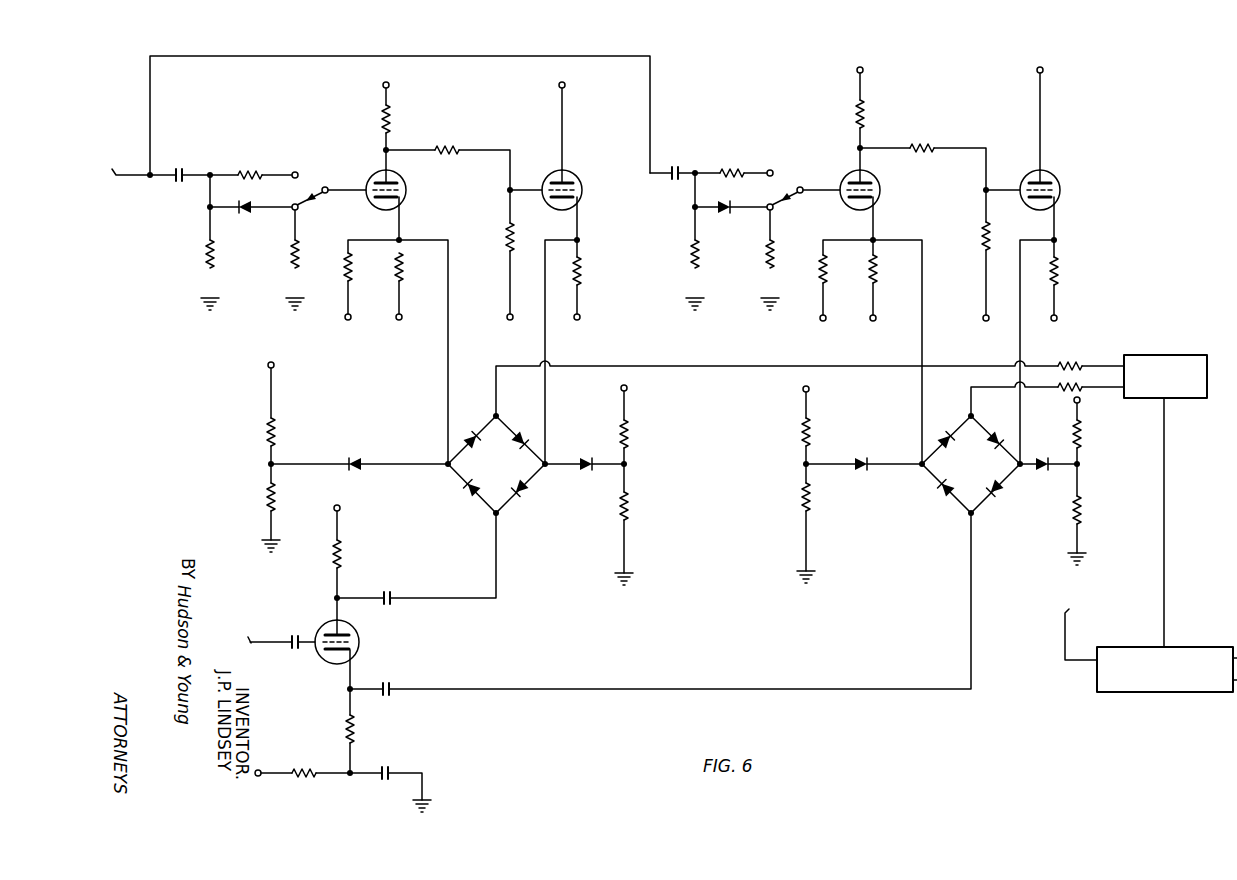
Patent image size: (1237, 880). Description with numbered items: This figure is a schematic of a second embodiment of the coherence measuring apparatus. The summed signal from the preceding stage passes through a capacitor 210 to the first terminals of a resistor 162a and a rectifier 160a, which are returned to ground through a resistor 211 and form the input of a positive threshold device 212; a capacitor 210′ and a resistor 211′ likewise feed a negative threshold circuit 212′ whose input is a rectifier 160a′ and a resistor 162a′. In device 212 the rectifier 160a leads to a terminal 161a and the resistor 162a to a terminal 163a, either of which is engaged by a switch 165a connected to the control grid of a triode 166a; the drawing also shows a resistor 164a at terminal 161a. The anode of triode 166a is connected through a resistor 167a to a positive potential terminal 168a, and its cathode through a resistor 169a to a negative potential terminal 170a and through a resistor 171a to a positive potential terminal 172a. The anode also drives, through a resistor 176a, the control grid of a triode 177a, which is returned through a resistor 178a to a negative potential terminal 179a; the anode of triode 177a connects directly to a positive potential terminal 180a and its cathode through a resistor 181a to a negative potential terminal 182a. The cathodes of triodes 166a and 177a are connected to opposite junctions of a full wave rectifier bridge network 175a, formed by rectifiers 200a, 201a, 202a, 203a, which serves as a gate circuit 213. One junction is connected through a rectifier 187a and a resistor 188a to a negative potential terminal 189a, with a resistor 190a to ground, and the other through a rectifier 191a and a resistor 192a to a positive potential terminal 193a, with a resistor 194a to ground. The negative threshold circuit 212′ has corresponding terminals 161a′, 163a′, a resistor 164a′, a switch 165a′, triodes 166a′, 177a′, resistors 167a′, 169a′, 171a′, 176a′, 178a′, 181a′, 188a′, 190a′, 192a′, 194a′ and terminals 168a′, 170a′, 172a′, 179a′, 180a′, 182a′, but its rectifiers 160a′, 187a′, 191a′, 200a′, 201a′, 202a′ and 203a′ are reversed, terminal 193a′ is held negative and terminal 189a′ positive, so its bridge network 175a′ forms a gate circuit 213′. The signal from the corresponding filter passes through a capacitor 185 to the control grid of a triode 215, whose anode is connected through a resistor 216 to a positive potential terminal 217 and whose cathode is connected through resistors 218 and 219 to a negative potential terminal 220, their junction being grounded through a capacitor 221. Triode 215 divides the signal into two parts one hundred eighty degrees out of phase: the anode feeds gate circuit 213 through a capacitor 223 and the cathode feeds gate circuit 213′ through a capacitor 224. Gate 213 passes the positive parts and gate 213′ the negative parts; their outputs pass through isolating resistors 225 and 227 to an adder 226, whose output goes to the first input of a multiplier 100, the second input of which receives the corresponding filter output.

The multiplier 100 is at (1188, 647).
The rectifier 160a is at (245, 215).
The rectifier 160a′ is at (710, 215).
The terminal 161a is at (298, 210).
The terminal 161a′ is at (773, 210).
The resistor 162a is at (254, 166).
The resistor 162a′ is at (732, 165).
The terminal 163a is at (297, 171).
The terminal 163a′ is at (773, 170).
The resistor 164a is at (292, 256).
The resistor 164a′ is at (767, 256).
The switch 165a is at (320, 195).
The switch 165a′ is at (798, 188).
The triode 166a is at (404, 187).
The triode 166a′ is at (880, 188).
The resistor 167a is at (390, 111).
The resistor 167a′ is at (866, 113).
The positive potential terminal 168a is at (383, 87).
The potential terminal 168a′ is at (864, 73).
The resistor 169a is at (400, 255).
The resistor 169a′ is at (876, 261).
The negative potential terminal 170a is at (399, 320).
The potential terminal 170a′ is at (873, 322).
The resistor 171a is at (346, 270).
The resistor 171a′ is at (818, 263).
The positive potential terminal 172a is at (346, 319).
The potential terminal 172a′ is at (821, 322).
The full wave rectifier bridge network 175a is at (508, 475).
The full wave rectifier bridge network 175a′ is at (986, 475).
The resistor 176a is at (448, 145).
The resistor 176a′ is at (916, 143).
The triode 177a is at (578, 172).
The triode 177a′ is at (1062, 181).
The resistor 178a is at (508, 226).
The resistor 178a′ is at (982, 227).
The negative potential terminal 179a is at (509, 320).
The potential terminal 179a′ is at (984, 322).
The positive potential terminal 180a is at (565, 87).
The potential terminal 180a′ is at (1045, 71).
The resistor 181a is at (585, 269).
The resistor 181a′ is at (1060, 266).
The negative potential terminal 182a is at (580, 316).
The potential terminal 182a′ is at (1058, 317).
The capacitor 185 is at (296, 636).
The rectifier 187a is at (355, 458).
The rectifier 187a′ is at (862, 459).
The resistor 188a is at (265, 429).
The resistor 188a′ is at (800, 433).
The negative potential terminal 189a is at (268, 368).
The positive potential terminal 189a′ is at (803, 391).
The resistor 190a is at (265, 491).
The resistor 190a′ is at (800, 511).
The rectifier 191a is at (586, 471).
The rectifier 191a′ is at (1040, 471).
The resistor 192a is at (629, 438).
The resistor 192a′ is at (1082, 434).
The positive potential terminal 193a is at (627, 389).
The negative potential terminal 193a′ is at (1080, 403).
The resistor 194a is at (629, 506).
The resistor 194a′ is at (1082, 509).
The rectifier 200a is at (468, 436).
The rectifier 200a′ is at (940, 438).
The rectifier 201a is at (470, 491).
The rectifier 201a′ is at (945, 491).
The rectifier 202a is at (521, 491).
The rectifier 202a′ is at (996, 489).
The rectifier 203a is at (522, 438).
The rectifier 203a′ is at (998, 438).
The capacitor 210 is at (180, 183).
The capacitor 210′ is at (676, 182).
The resistor 211 is at (207, 254).
The resistor 211′ is at (690, 251).
The positive threshold device 212 is at (320, 136).
The negative threshold circuit 212′ is at (806, 131).
The gate circuit 213 is at (378, 400).
The gate circuit 213′ is at (935, 538).
The triode 215 is at (330, 663).
The resistor 216 is at (343, 554).
The positive potential terminal 217 is at (340, 506).
The resistor 218 is at (360, 729).
The resistor 219 is at (306, 786).
The negative potential terminal 220 is at (259, 769).
The capacitor 221 is at (390, 768).
The capacitor 223 is at (390, 593).
The capacitor 224 is at (390, 684).
The isolating resistor 225 is at (1070, 356).
The adder 226 is at (1180, 355).
The isolating resistor 227 is at (1070, 391).